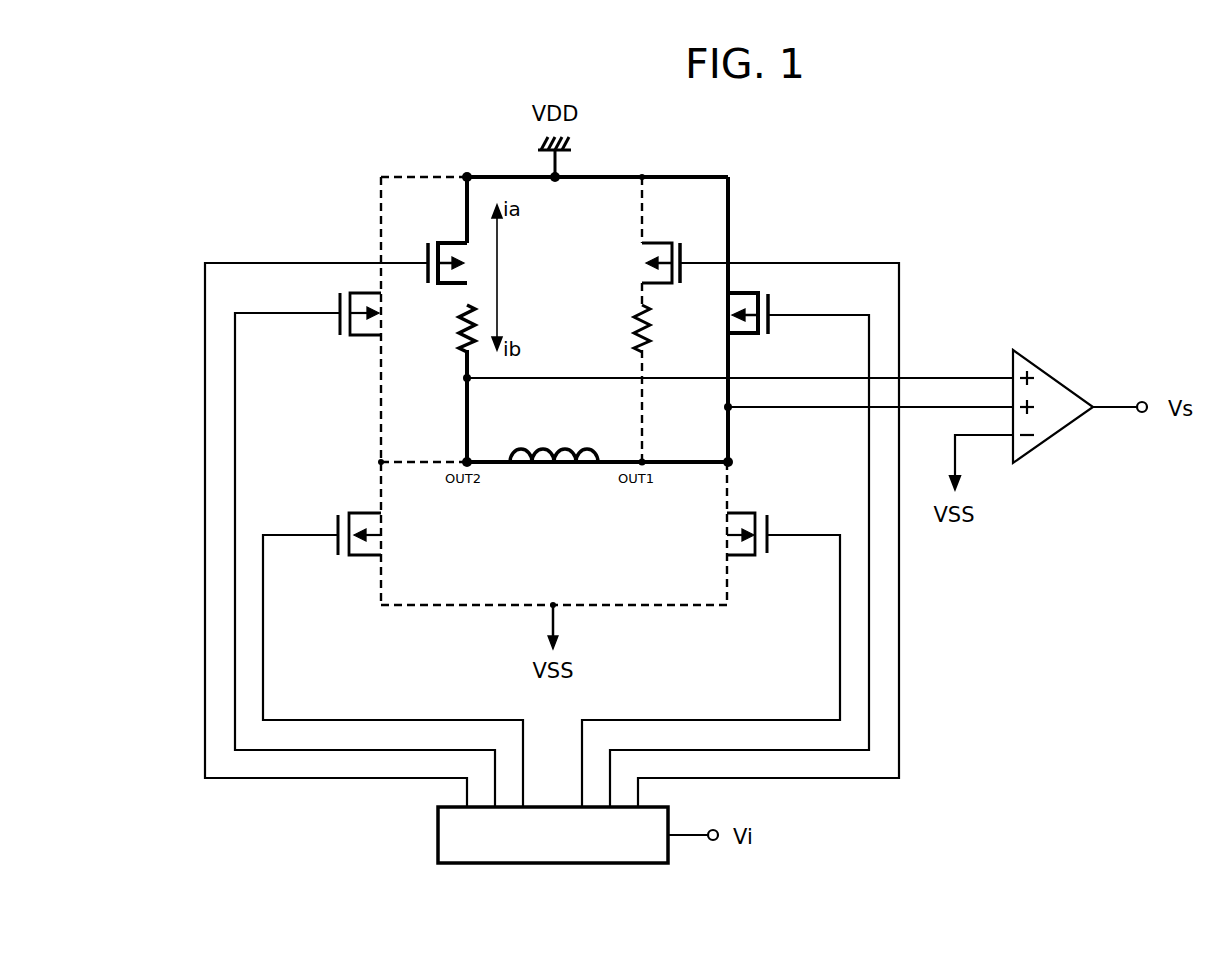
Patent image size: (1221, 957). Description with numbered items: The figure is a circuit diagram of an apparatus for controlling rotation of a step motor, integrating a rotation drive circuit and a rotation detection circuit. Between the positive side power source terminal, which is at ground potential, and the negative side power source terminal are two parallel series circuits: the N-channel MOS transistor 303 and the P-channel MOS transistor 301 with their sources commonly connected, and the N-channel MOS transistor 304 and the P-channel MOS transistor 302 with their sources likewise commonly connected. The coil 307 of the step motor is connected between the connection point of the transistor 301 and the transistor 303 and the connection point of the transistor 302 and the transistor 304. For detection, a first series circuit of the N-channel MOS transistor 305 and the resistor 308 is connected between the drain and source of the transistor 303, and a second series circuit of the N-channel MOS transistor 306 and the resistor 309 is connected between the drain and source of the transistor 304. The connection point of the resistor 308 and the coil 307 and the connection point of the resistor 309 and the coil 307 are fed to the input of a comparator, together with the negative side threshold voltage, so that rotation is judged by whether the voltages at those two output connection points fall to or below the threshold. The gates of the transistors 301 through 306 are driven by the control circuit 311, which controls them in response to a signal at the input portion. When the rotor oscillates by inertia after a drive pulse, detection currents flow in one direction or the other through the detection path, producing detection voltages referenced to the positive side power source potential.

The P-channel MOS transistor 301 is at (337, 557).
The P-channel MOS transistor 302 is at (772, 556).
The N-channel MOS transistor 303 is at (338, 328).
The N-channel MOS transistor 304 is at (740, 293).
The N-channel MOS transistor 305 is at (424, 290).
The N-channel MOS transistor 306 is at (681, 288).
The coil 307 is at (553, 472).
The resistor for detection 308 is at (480, 322).
The resistor for detection 309 is at (623, 320).
The control circuit 311 is at (552, 865).